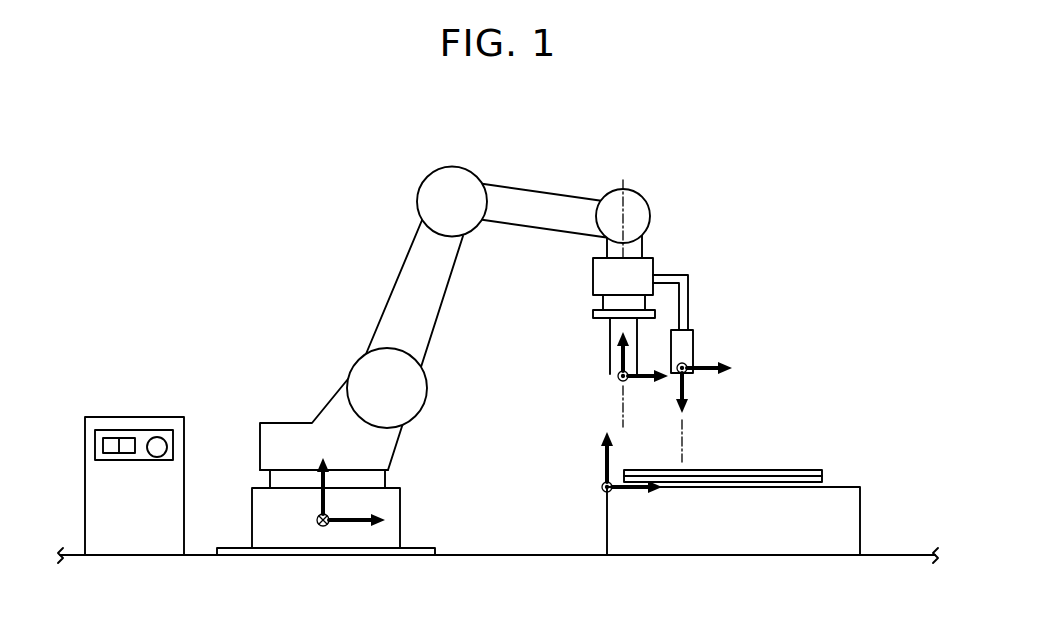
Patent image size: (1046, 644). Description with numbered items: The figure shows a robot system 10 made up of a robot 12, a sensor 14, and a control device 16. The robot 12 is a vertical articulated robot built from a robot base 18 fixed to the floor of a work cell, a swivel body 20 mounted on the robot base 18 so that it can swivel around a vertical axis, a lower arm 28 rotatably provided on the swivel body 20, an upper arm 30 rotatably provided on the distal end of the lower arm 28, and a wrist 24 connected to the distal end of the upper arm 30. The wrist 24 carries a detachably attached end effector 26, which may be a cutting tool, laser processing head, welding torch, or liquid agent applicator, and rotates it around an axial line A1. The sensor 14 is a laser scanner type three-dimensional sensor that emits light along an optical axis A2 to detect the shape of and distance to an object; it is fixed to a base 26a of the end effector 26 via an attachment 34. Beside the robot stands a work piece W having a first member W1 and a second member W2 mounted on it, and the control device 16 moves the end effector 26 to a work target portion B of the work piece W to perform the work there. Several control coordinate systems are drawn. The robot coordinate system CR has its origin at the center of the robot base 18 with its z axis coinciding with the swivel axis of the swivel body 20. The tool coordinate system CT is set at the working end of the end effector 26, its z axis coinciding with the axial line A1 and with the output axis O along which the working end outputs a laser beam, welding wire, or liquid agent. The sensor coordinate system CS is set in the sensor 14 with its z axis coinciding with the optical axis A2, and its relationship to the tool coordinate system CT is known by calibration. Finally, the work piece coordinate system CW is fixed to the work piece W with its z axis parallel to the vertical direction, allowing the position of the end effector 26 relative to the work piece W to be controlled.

The robot system 10 is at (780, 119).
The robot 12 is at (366, 231).
The sensor 14 is at (700, 346).
The control device 16 is at (138, 417).
The robot base 18 is at (262, 517).
The swivel body 20 is at (287, 433).
The wrist 24 is at (455, 160).
The end effector 26 is at (586, 312).
The base of the end effector 26a is at (603, 278).
The lower arm 28 is at (397, 317).
The upper arm 30 is at (547, 200).
The attachment 34 is at (690, 313).
The axial line A1 is at (628, 186).
The optical axis A2 is at (686, 457).
The work target portion B is at (814, 470).
The work piece W is at (753, 480).
The first member W1 is at (798, 484).
The second member W2 is at (782, 470).
The robot coordinate system CR is at (350, 526).
The tool coordinate system CT is at (612, 352).
The sensor coordinate system CS is at (707, 375).
The work piece coordinate system CW is at (600, 463).
The output axis O is at (628, 393).